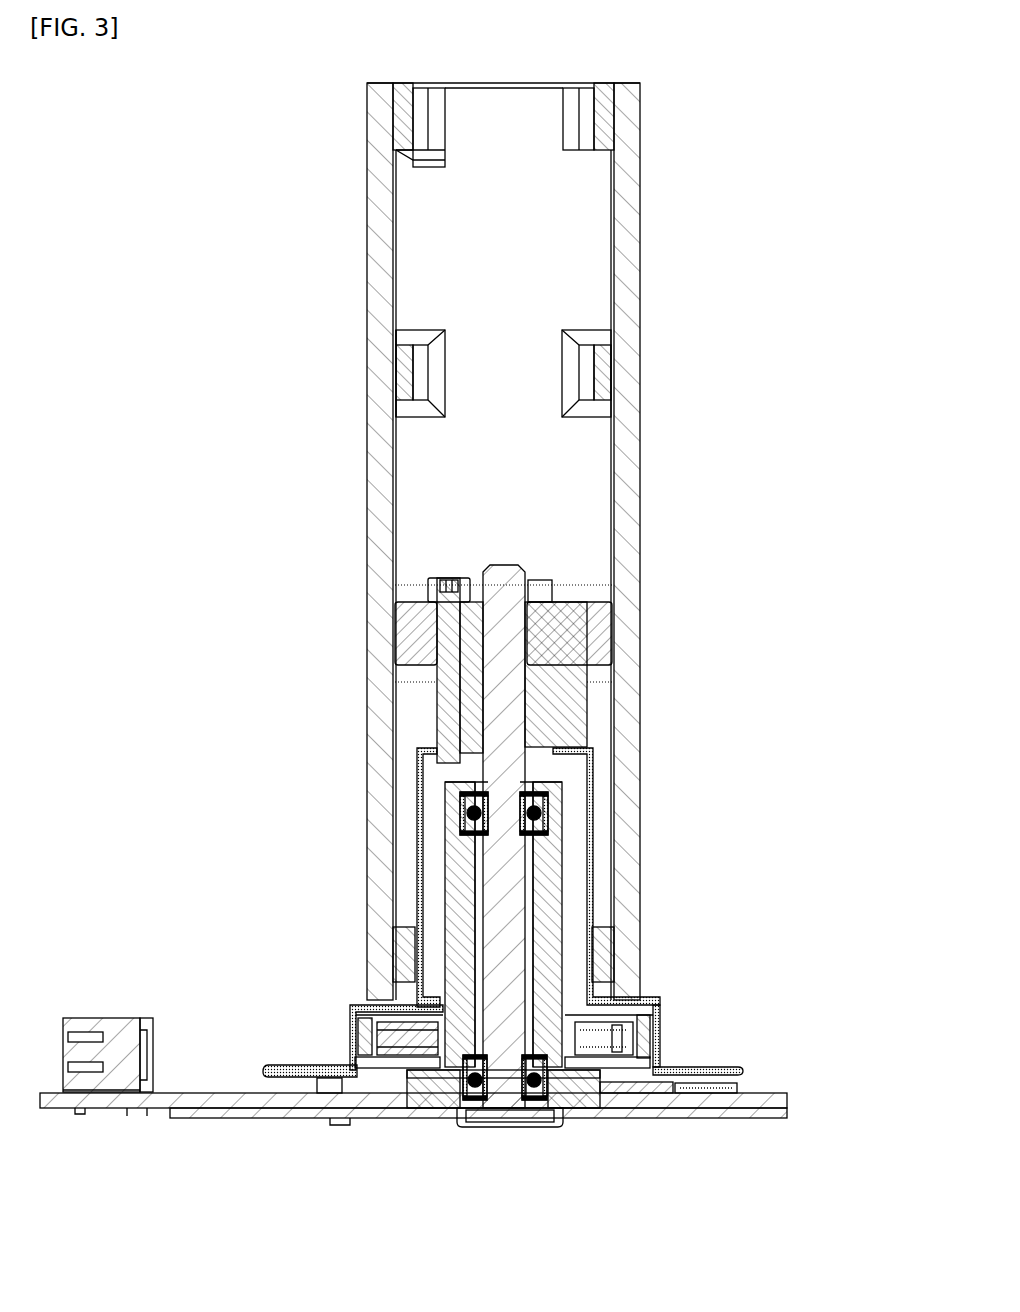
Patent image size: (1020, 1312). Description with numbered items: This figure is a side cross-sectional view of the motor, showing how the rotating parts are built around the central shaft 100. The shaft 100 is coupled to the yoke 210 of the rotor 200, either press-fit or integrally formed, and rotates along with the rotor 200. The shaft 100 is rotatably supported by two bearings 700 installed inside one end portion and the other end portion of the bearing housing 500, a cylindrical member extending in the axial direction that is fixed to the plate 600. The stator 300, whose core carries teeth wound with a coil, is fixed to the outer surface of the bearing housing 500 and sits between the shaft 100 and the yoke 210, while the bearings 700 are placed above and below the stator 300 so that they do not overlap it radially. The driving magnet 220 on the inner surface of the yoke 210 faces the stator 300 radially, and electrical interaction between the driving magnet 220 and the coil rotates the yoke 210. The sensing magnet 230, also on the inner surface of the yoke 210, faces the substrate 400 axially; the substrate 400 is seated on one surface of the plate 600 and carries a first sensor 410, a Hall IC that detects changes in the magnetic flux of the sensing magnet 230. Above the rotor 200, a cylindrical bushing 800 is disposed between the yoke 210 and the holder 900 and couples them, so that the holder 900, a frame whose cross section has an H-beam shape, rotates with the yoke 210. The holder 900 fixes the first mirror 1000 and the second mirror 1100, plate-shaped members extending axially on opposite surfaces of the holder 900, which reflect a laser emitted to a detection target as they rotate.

The shaft 100 is at (508, 558).
The rotor 200 is at (343, 1027).
The yoke 210 is at (648, 1003).
The driving magnet 220 is at (657, 1033).
The sensing magnet 230 is at (743, 1070).
The stator 300 is at (397, 1067).
The substrate 400 is at (113, 1112).
The first sensor 410 is at (717, 1090).
The bearing housing 500 is at (567, 855).
The plate 600 is at (225, 1120).
The bearings 700 is at (548, 805).
The bushing 800 is at (553, 705).
The holder 900 is at (575, 590).
The first mirror 1000 is at (504, 541).
The second mirror 1100 is at (360, 160).